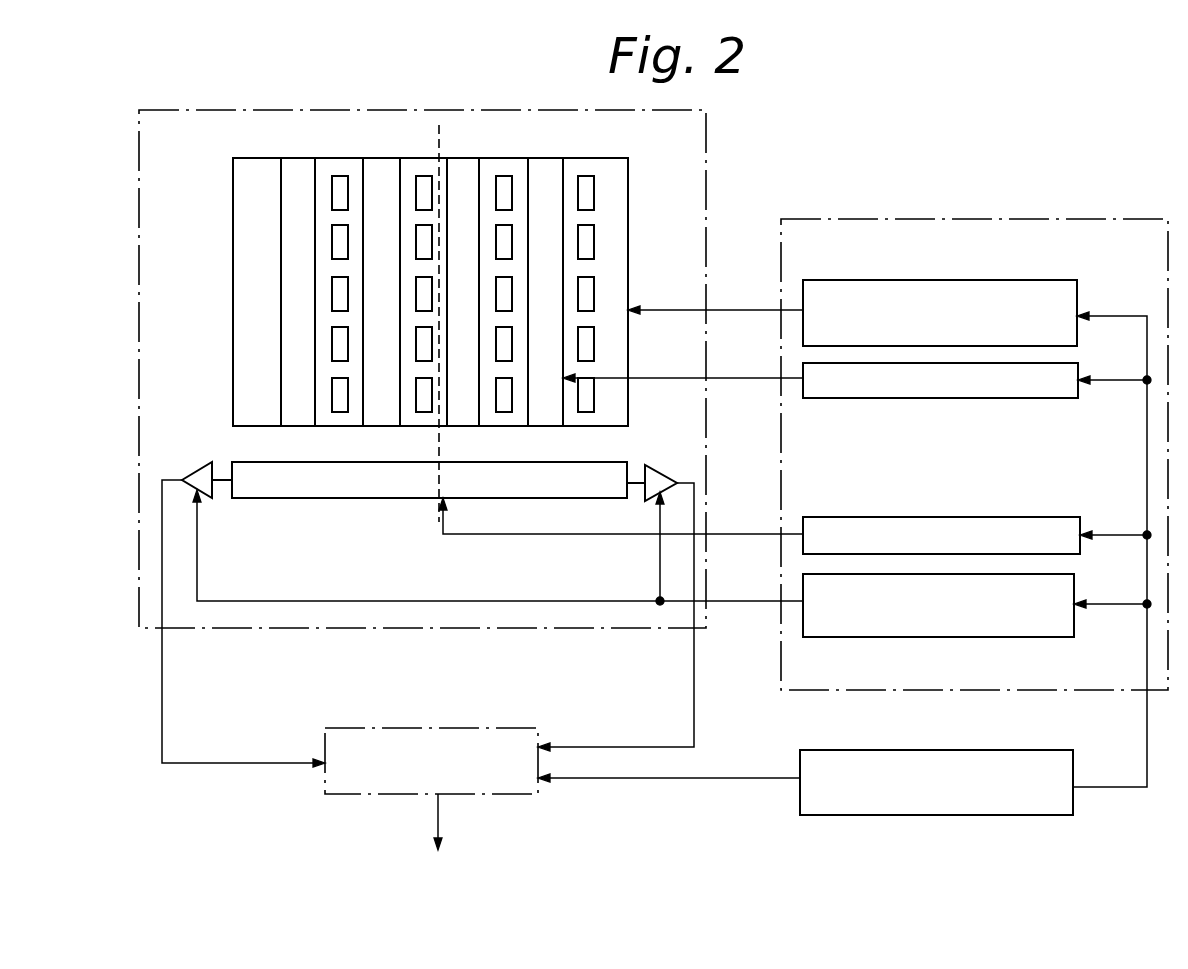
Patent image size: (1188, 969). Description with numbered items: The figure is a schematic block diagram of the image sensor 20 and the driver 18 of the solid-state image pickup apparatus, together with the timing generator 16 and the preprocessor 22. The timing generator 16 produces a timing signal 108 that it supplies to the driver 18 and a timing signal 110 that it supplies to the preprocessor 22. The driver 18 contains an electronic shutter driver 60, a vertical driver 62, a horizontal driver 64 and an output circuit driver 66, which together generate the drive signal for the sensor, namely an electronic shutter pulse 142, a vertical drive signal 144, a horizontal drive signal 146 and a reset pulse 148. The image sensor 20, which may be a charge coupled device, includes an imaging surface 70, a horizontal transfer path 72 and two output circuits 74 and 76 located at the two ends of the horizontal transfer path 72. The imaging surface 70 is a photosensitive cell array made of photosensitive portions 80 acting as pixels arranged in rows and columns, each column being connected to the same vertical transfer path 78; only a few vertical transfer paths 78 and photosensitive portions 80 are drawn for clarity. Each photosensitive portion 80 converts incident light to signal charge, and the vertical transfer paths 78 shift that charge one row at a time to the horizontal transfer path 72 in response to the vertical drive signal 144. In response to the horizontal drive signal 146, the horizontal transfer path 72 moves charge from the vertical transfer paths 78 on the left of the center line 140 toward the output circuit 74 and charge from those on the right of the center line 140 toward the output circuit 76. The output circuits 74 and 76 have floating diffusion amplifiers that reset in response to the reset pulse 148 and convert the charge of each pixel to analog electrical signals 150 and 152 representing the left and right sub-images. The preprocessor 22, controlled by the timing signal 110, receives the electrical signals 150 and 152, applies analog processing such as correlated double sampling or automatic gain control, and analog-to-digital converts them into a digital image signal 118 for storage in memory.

The timing generator 16 is at (962, 818).
The driver 18 is at (1028, 220).
The image sensor 20 is at (706, 143).
The preprocessor 22 is at (498, 796).
The electronic shutter driver 60 is at (965, 280).
The vertical driver 62 is at (960, 398).
The horizontal driver 64 is at (935, 517).
The output circuit driver 66 is at (960, 637).
The imaging surface 70 is at (434, 292).
The horizontal transfer path 72 is at (332, 498).
The output circuit 74 is at (200, 468).
The output circuit 76 is at (660, 468).
The vertical transfer path 78 is at (281, 247).
The photosensitive portion 80 is at (332, 193).
The timing signal 108 is at (1147, 720).
The timing signal 110 is at (685, 778).
The digital image signal 118 is at (438, 812).
The center line 140 is at (440, 145).
The electronic shutter pulse 142 is at (732, 310).
The vertical drive signal 144 is at (751, 380).
The horizontal drive signal 146 is at (737, 534).
The reset pulse 148 is at (750, 605).
The electrical signal 150 is at (162, 665).
The electrical signal 152 is at (694, 676).